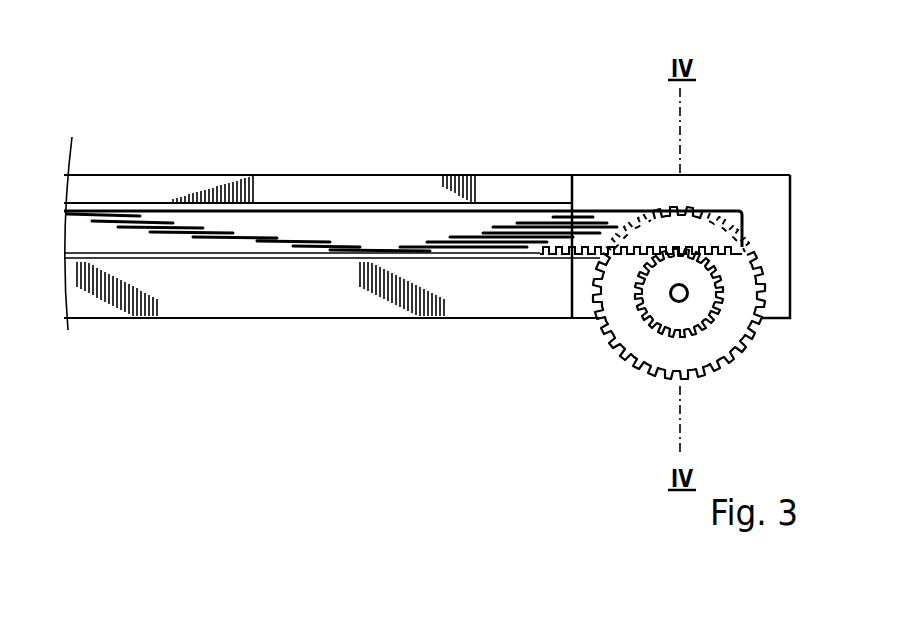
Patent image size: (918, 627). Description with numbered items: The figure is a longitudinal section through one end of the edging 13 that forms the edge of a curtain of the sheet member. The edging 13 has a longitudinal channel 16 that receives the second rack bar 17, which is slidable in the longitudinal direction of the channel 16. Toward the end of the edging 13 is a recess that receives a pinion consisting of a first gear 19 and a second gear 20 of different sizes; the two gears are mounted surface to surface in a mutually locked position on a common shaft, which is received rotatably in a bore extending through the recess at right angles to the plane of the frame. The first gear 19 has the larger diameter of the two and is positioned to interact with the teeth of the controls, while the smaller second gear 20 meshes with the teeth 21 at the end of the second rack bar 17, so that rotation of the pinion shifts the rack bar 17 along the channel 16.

The edging 13 is at (204, 180).
The longitudinal channel 16 is at (297, 211).
The second rack bar 17 is at (204, 230).
The first gear 19 is at (733, 335).
The second gear 20 is at (698, 310).
The teeth 21 is at (645, 253).